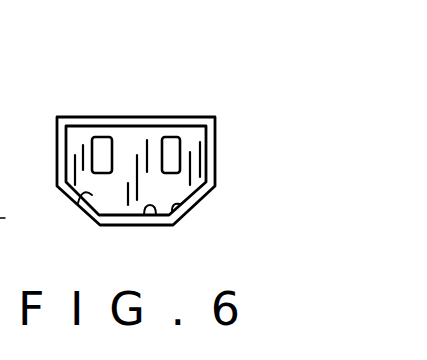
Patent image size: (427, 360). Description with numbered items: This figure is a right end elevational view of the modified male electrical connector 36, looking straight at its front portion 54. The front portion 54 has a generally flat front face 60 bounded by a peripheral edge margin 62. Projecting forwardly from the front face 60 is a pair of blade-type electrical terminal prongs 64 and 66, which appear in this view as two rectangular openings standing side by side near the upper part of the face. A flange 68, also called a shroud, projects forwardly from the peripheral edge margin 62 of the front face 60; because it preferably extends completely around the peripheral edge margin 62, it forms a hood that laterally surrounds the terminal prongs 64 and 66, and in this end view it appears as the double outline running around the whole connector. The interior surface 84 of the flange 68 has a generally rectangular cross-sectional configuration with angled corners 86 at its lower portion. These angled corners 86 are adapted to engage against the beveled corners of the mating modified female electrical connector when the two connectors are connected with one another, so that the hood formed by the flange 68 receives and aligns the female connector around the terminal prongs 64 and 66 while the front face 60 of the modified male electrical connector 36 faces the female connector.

The modified male electrical connector 36 is at (147, 88).
The front portion 54 is at (92, 117).
The flange 68 is at (183, 119).
The blade-type electrical terminal prong 64 is at (100, 147).
The blade-type electrical terminal prong 66 is at (172, 153).
The peripheral edge margin 62 is at (158, 193).
The front face 60 is at (176, 199).
The angled corners 86 is at (86, 196).
The interior surface 84 is at (147, 213).